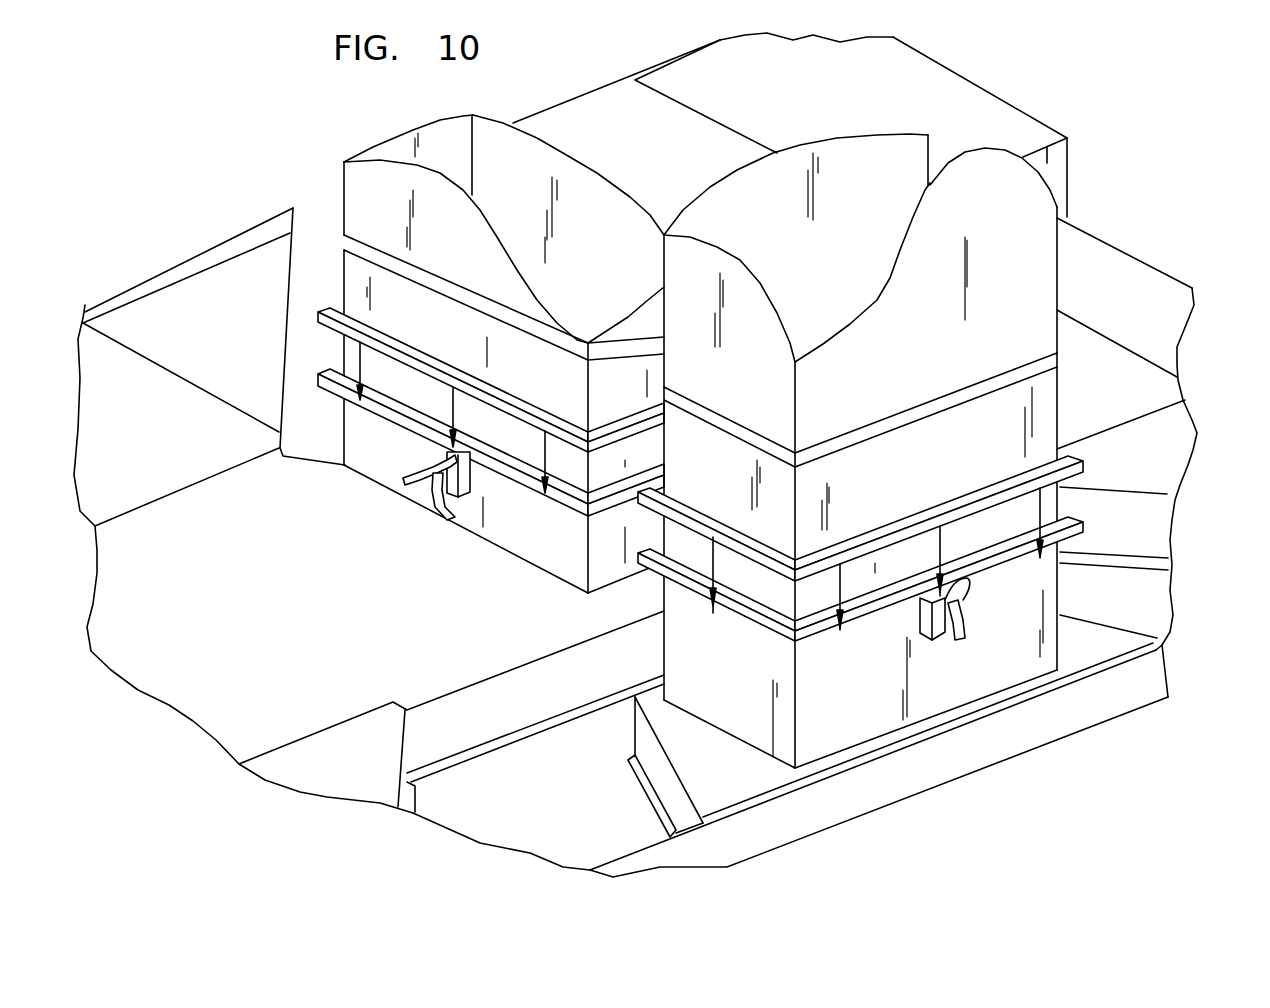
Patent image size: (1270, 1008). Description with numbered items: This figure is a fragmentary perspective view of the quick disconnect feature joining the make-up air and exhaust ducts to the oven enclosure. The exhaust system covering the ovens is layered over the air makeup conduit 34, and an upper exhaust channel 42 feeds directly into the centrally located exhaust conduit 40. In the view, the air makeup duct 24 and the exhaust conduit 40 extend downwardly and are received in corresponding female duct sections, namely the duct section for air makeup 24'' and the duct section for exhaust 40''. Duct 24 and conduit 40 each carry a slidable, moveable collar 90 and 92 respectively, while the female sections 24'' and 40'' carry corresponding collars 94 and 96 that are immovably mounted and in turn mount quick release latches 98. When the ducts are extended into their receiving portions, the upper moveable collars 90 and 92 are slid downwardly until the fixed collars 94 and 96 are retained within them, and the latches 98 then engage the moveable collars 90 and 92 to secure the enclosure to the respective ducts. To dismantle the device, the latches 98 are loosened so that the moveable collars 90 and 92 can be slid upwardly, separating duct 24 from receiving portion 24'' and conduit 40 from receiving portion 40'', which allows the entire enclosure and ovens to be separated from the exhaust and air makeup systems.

The duct 24 is at (860, 252).
The duct section for air makeup 24'' is at (906, 560).
The air makeup conduit 34 is at (790, 760).
The conduit 40 is at (482, 220).
The duct section for exhaust 40'' is at (472, 421).
The upper exhaust channel 42 is at (369, 510).
The moveable collar 90 is at (1088, 466).
The moveable collar 92 is at (454, 380).
The collar 94 is at (758, 628).
The collar 96 is at (522, 487).
The quick release latch 98 is at (433, 462).